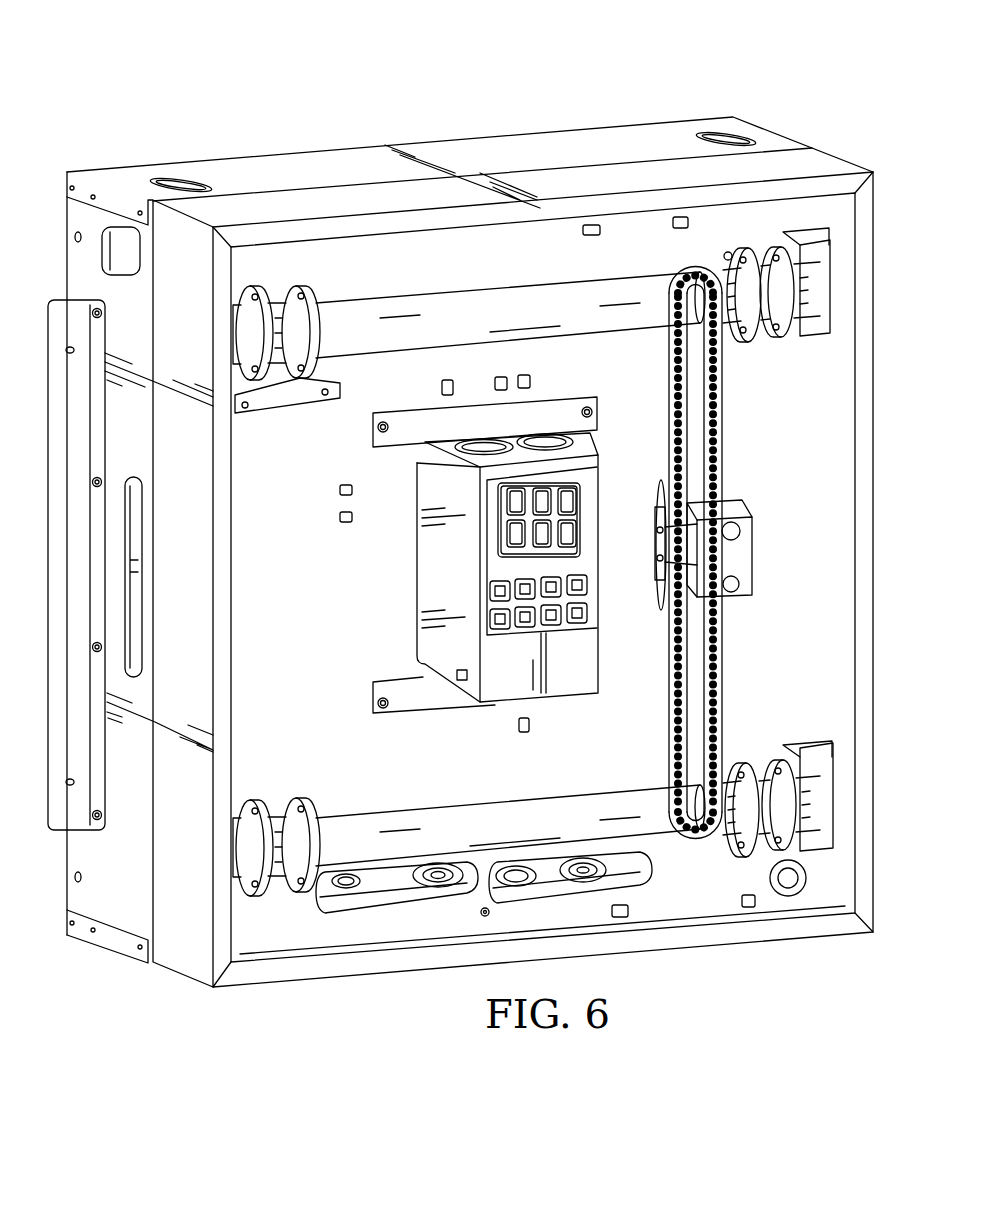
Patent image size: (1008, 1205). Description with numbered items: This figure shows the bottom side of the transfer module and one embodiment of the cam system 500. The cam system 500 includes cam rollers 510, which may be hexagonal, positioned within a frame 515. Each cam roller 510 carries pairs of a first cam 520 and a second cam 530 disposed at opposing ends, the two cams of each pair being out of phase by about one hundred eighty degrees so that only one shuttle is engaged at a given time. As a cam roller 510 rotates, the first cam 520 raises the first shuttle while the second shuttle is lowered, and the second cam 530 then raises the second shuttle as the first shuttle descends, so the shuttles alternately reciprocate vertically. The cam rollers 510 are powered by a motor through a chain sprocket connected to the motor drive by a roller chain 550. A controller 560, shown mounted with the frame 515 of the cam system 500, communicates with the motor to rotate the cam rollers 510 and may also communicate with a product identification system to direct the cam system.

The cam system 500 is at (257, 68).
The cam roller 510 is at (427, 808).
The frame 515 is at (773, 940).
The first cam 520 is at (772, 245).
The second cam 530 is at (748, 334).
The roller chain 550 is at (725, 640).
The controller 560 is at (413, 563).